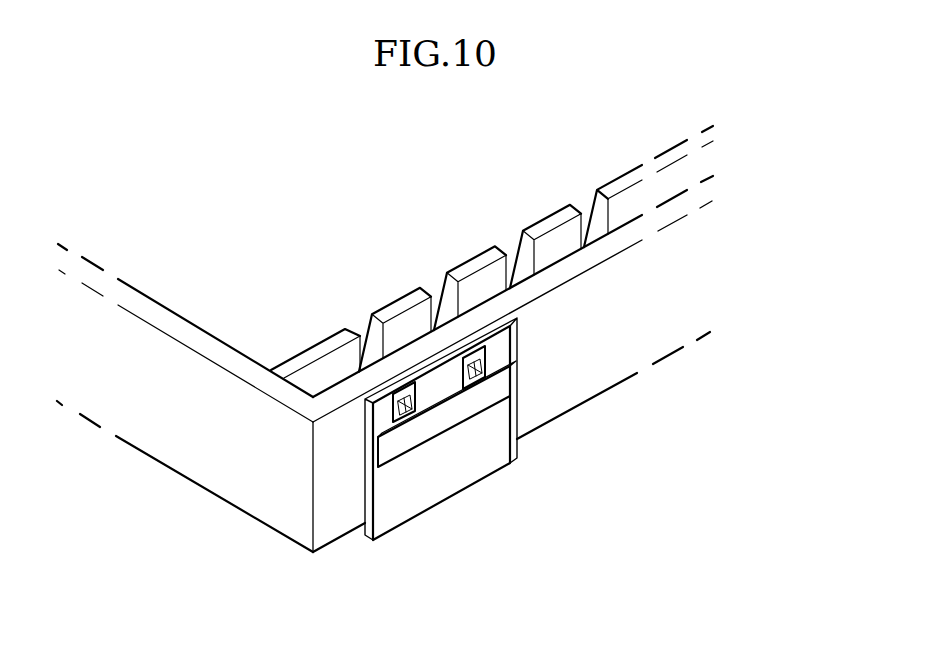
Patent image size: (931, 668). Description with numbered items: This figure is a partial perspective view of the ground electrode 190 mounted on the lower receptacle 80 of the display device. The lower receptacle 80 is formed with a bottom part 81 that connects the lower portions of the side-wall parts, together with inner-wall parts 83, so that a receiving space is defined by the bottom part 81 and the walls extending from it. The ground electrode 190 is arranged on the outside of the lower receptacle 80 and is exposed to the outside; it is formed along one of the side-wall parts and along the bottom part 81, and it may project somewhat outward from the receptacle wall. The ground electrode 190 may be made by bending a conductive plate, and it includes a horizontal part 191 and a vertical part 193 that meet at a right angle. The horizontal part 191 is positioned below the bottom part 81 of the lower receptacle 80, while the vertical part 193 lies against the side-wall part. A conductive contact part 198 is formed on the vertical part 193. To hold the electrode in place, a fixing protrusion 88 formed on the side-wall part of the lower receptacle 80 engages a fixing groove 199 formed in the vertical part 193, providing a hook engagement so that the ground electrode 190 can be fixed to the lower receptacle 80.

The lower receptacle 80 is at (437, 339).
The bottom part 81 is at (617, 285).
The inner-wall parts 83 is at (622, 207).
The fixing protrusion 88 is at (494, 388).
The ground electrode 190 is at (446, 472).
The horizontal part 191 is at (355, 524).
The vertical part 193 is at (388, 480).
The conductive contact part 198 is at (412, 437).
The fixing groove 199 is at (418, 406).